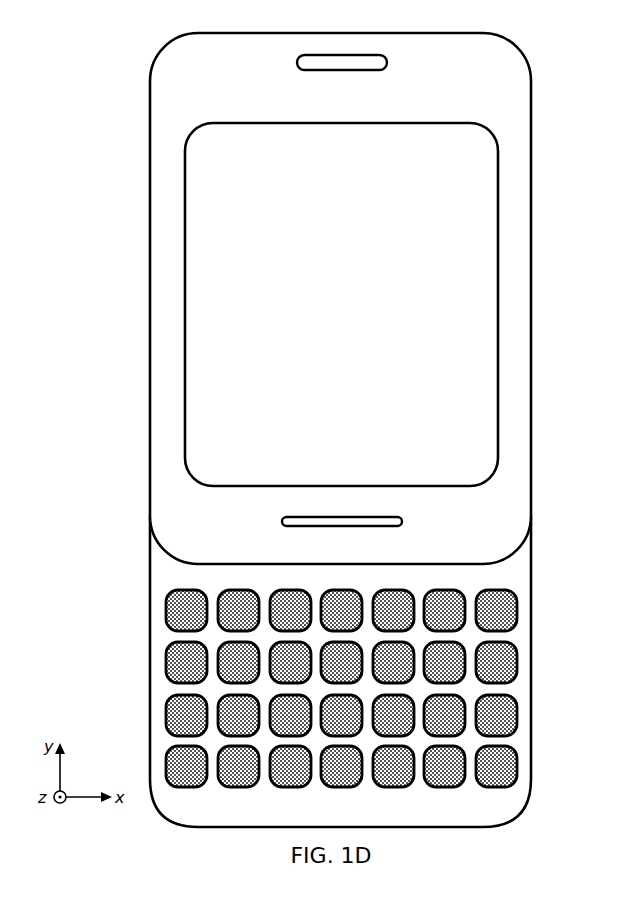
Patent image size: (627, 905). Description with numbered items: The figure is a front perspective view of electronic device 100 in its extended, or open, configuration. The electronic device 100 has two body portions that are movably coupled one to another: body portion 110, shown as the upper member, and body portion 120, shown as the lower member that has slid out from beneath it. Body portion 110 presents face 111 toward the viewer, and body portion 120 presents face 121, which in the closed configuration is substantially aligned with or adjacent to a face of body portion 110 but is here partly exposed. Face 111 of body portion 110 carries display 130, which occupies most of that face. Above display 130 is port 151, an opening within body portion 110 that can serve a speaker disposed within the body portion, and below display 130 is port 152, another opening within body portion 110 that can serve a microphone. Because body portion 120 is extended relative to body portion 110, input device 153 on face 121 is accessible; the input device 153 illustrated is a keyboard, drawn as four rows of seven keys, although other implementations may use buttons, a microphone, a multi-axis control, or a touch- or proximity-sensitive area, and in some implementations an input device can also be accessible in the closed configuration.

The electronic device 100 is at (52, 138).
The body portion 110 is at (480, 33).
The face 111 is at (179, 57).
The body portion 120 is at (488, 828).
The face 121 is at (166, 566).
The display 130 is at (443, 123).
The port 151 is at (378, 72).
The port 152 is at (396, 528).
The input device 153 is at (542, 588).